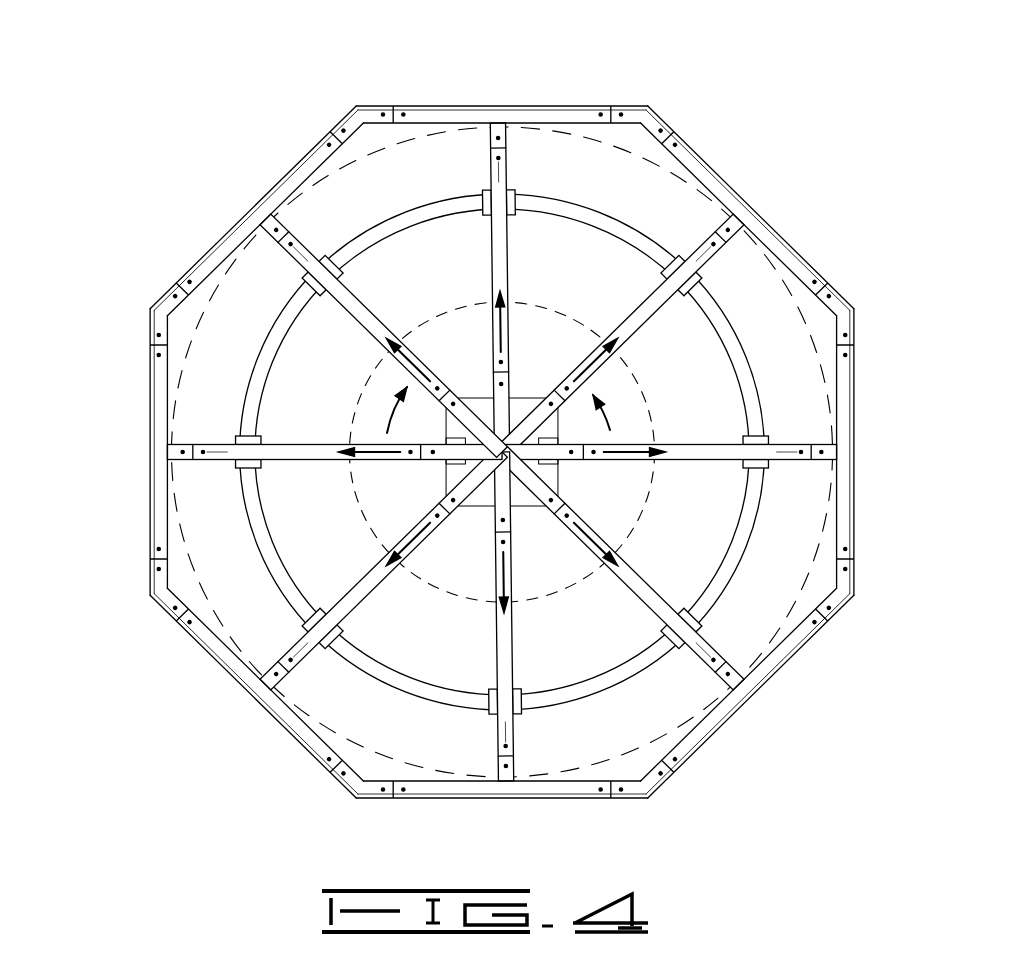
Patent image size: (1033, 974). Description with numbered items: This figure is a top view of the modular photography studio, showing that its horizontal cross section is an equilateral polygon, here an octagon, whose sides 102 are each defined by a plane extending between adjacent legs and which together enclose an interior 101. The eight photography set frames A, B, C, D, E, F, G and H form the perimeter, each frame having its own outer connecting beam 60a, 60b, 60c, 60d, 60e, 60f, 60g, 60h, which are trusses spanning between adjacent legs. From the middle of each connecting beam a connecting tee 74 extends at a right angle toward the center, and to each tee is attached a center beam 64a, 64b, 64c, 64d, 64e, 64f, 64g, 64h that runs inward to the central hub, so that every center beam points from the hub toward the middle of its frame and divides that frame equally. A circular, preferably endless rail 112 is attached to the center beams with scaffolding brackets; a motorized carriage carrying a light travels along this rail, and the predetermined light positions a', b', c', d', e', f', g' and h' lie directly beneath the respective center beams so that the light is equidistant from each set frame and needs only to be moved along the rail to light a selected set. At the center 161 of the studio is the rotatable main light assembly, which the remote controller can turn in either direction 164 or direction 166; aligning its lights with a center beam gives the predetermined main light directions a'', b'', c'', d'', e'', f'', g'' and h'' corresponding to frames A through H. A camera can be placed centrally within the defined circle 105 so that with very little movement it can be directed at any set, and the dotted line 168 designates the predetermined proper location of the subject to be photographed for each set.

The connecting beam 60a is at (492, 817).
The connecting beam 60b is at (760, 690).
The connecting beam 60c is at (892, 452).
The connecting beam 60d is at (765, 213).
The connecting beam 60e is at (501, 70).
The connecting beam 60f is at (228, 213).
The connecting beam 60g is at (104, 452).
The connecting beam 60h is at (237, 690).
The center beam 64a is at (500, 715).
The center beam 64b is at (688, 612).
The center beam 64c is at (745, 463).
The center beam 64d is at (697, 255).
The center beam 64e is at (493, 168).
The center beam 64f is at (304, 245).
The center beam 64g is at (277, 443).
The center beam 64h is at (333, 608).
The side 102 is at (522, 107).
The interior 101 is at (807, 573).
The defined circle 105 is at (553, 310).
The rail 112 is at (600, 680).
The center 161 is at (515, 387).
The direction 164 is at (636, 394).
The direction 166 is at (388, 408).
The dotted line 168 is at (356, 164).
The connecting tee 74 is at (263, 668).
The photography set frame A is at (557, 800).
The photography set frame B is at (702, 743).
The photography set frame C is at (853, 516).
The photography set frame D is at (710, 163).
The photography set frame E is at (438, 107).
The photography set frame F is at (186, 275).
The photography set frame G is at (148, 435).
The photography set frame H is at (212, 655).
The light position a' is at (533, 616).
The light position b' is at (620, 577).
The light position c' is at (669, 422).
The light position d' is at (627, 335).
The light position e' is at (506, 287).
The light position f' is at (367, 335).
The light position g' is at (334, 480).
The light position h' is at (383, 580).
The main light direction a'' is at (536, 580).
The main light direction b'' is at (630, 529).
The main light direction c'' is at (654, 426).
The main light direction d'' is at (600, 335).
The main light direction e'' is at (476, 310).
The main light direction f'' is at (408, 330).
The main light direction g'' is at (357, 481).
The main light direction h'' is at (383, 544).